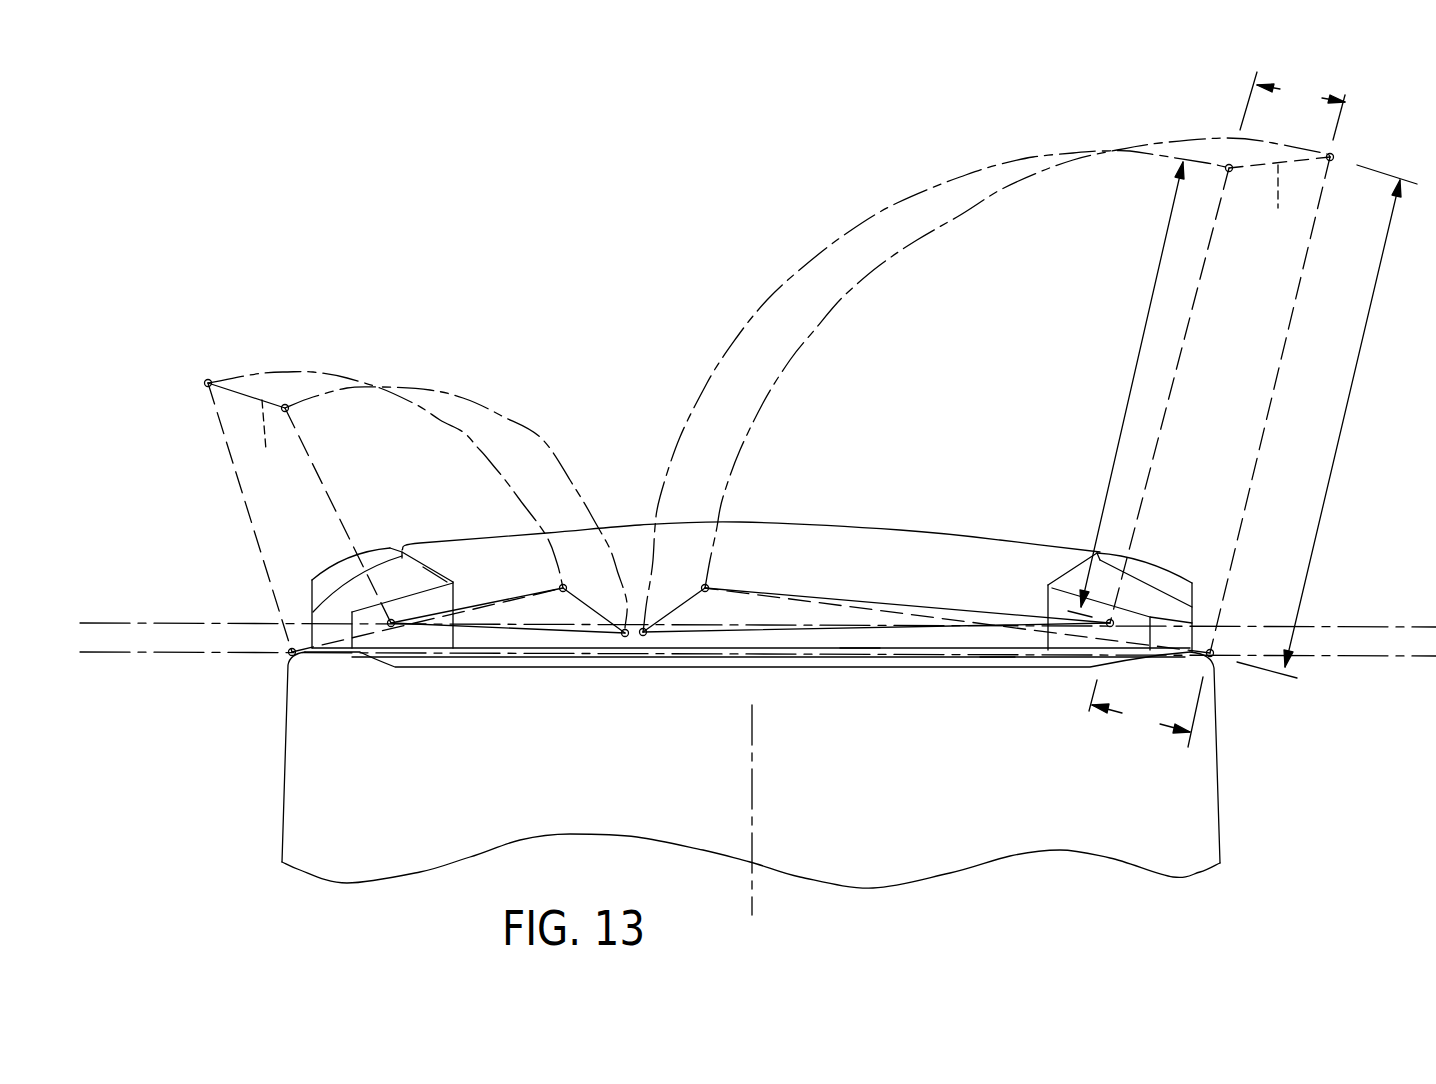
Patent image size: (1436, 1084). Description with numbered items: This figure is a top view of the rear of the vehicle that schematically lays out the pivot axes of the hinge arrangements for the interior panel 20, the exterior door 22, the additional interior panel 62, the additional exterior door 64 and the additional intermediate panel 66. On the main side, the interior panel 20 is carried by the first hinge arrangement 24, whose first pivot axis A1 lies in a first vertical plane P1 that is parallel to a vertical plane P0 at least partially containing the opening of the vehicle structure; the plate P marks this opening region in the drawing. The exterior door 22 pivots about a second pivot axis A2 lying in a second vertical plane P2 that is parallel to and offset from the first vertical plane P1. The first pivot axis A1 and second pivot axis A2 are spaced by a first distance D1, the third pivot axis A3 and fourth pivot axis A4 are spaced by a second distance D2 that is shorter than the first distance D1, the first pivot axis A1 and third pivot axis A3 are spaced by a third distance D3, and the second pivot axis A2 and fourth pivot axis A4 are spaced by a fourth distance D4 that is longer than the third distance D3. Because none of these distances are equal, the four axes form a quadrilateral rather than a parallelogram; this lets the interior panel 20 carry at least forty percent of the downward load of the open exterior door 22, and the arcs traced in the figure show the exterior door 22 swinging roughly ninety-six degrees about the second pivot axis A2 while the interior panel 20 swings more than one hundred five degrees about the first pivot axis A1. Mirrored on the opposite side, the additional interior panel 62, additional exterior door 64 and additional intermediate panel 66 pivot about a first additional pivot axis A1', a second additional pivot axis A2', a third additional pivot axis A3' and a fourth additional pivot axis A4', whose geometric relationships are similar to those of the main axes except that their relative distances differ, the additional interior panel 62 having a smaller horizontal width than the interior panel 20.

The interior panel 20 is at (1157, 460).
The exterior door 22 is at (1298, 290).
The first hinge arrangement 24 is at (1283, 202).
The additional interior panel 62 is at (329, 487).
The additional exterior door 64 is at (250, 523).
The additional intermediate panel 66 is at (268, 442).
The first pivot axis A1 is at (1143, 577).
The second pivot axis A2 is at (1242, 619).
The third pivot axis A3 is at (953, 442).
The fourth pivot axis A4 is at (1057, 358).
The first additional pivot axis A1' is at (407, 668).
The second additional pivot axis A2' is at (260, 687).
The third additional pivot axis A3' is at (455, 561).
The fourth additional pivot axis A4' is at (373, 453).
The first vertical plane P1 is at (100, 622).
The second vertical plane P2 is at (105, 653).
The vertical plane P0 is at (860, 672).
The plate P is at (997, 658).
The first distance D1 is at (1146, 712).
The second distance D2 is at (1292, 106).
The third distance D3 is at (1126, 389).
The fourth distance D4 is at (1327, 421).